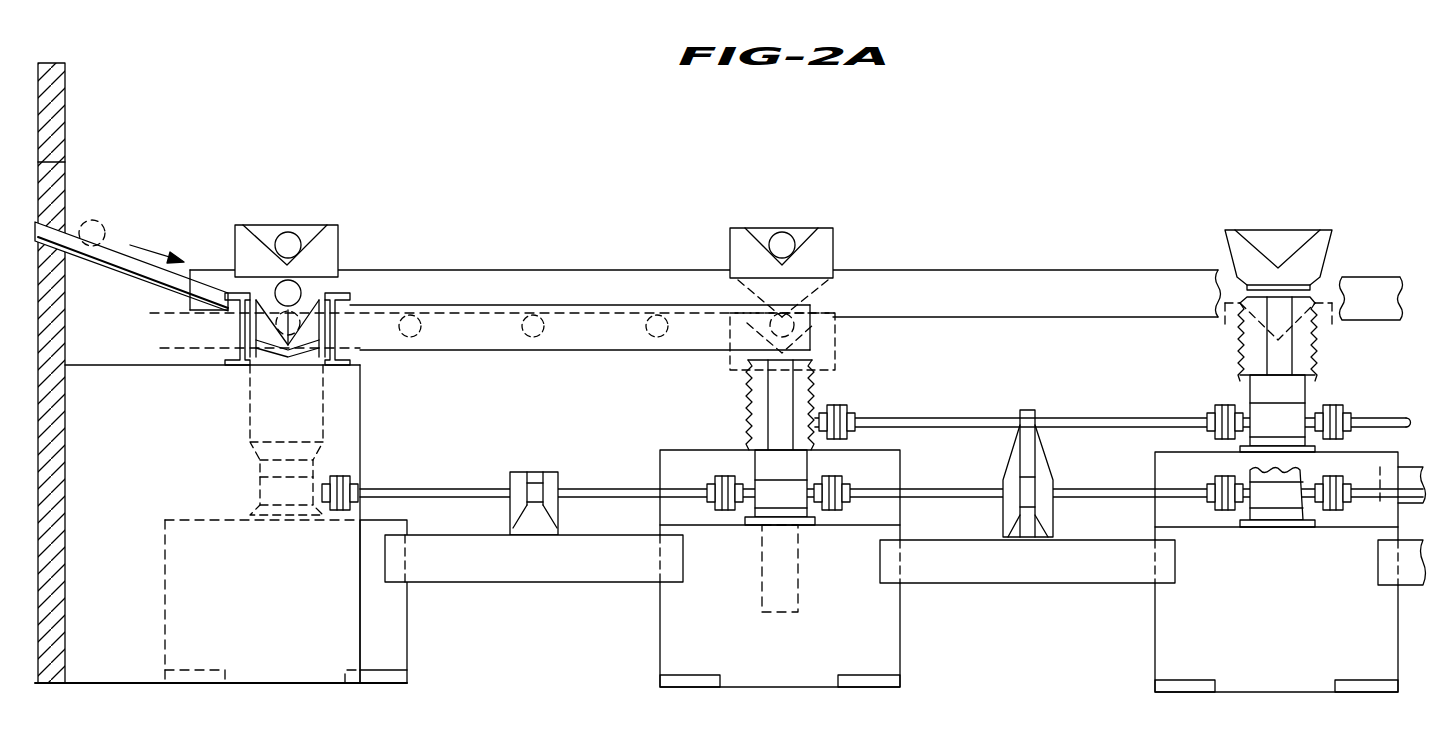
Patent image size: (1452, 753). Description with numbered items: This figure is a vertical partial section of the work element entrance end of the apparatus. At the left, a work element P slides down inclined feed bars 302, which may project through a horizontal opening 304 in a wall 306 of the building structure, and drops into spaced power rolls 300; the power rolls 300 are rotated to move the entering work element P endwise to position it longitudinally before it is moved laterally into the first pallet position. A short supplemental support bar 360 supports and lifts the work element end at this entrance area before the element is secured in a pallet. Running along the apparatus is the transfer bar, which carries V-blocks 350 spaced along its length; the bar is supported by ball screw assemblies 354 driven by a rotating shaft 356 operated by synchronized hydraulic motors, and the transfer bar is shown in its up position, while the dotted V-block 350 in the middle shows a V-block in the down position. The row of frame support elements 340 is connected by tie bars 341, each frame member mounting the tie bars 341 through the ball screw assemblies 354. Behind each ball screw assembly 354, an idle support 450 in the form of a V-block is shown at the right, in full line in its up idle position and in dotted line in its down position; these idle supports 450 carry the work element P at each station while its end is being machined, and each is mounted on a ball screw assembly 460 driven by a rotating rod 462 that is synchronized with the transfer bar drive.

The power rolls 300 is at (275, 348).
The inclined feed bars 302 is at (121, 268).
The horizontal opening 304 is at (65, 165).
The wall 306 is at (66, 113).
The frame support elements 340 is at (348, 647).
The tie bars 341 is at (505, 568).
The V-blocks 350 is at (330, 247).
The ball screw assemblies 354 is at (250, 430).
The rotating shaft 356 is at (440, 478).
The supplemental support bar 360 is at (455, 340).
The idle support 450 is at (1235, 237).
The ball screw assembly 460 is at (1292, 393).
The rotating rod 462 is at (1115, 405).
The work element P is at (107, 228).